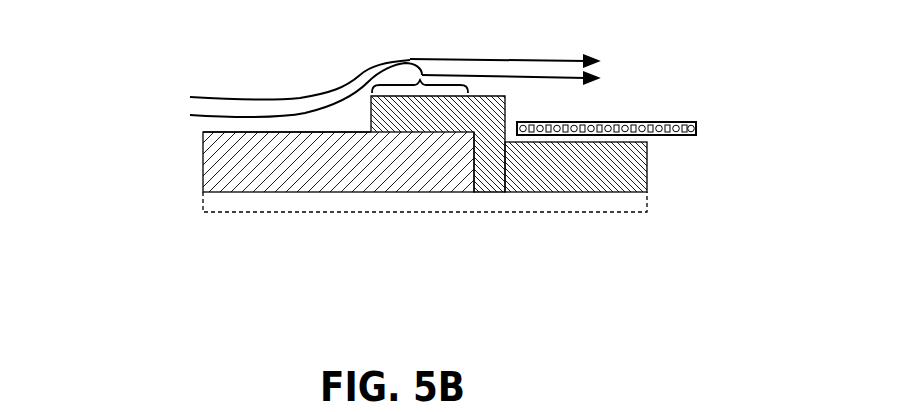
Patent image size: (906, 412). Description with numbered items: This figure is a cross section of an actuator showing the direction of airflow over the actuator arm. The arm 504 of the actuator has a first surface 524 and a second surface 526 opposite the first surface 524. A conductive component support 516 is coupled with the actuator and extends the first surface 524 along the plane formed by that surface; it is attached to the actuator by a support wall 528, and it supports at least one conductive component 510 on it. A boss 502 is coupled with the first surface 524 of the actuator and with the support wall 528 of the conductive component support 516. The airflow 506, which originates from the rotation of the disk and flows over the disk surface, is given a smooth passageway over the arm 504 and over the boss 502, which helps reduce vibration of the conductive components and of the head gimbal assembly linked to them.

The boss 502 is at (420, 59).
The arm 504 is at (297, 160).
The airflow 506 is at (462, 58).
The conductive component 510 is at (668, 122).
The conductive component support 516 is at (482, 233).
The first surface 524 is at (208, 132).
The second surface 526 is at (222, 213).
The support wall 528 is at (505, 193).